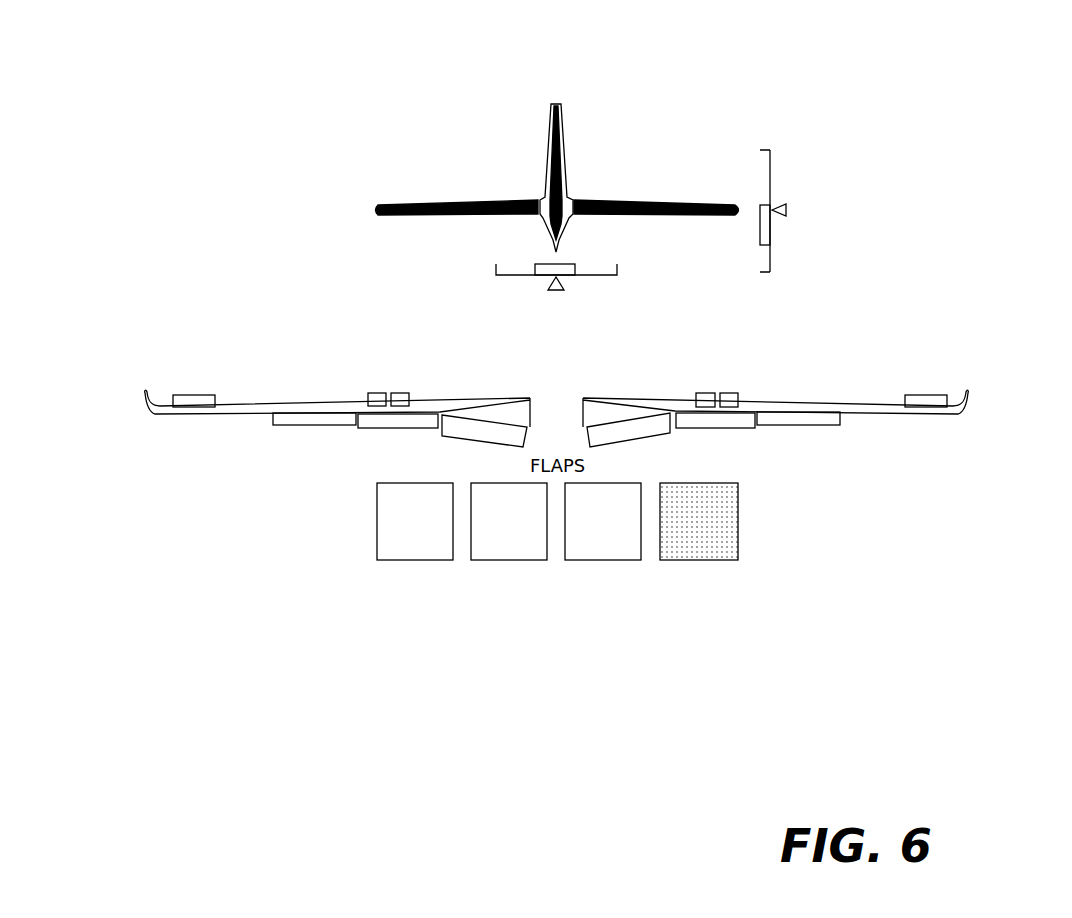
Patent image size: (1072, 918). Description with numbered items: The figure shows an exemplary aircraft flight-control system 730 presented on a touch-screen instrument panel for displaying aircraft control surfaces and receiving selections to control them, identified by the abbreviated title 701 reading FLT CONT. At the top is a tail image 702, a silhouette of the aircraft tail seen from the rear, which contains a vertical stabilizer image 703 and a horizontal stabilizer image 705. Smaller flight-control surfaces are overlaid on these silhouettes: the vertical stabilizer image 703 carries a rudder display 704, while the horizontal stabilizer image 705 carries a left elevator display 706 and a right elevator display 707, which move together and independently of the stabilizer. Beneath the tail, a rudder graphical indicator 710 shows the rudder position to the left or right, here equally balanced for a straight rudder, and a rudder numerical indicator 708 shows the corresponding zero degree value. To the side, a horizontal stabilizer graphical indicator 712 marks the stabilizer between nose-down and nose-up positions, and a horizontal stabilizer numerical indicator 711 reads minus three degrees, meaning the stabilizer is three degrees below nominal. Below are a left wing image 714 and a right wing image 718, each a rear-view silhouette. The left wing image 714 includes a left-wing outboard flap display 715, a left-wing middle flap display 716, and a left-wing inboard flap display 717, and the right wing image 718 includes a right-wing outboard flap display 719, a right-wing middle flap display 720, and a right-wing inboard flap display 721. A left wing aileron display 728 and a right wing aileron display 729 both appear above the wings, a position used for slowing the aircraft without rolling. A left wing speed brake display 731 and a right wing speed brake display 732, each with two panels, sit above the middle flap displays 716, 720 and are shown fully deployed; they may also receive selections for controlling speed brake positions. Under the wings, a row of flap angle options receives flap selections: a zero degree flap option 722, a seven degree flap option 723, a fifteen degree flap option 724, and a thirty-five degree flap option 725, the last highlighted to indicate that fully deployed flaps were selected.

The abbreviated title 701 is at (167, 628).
The tail image 702 is at (356, 151).
The vertical stabilizer image 703 is at (556, 102).
The rudder display 704 is at (550, 162).
The horizontal stabilizer image 705 is at (376, 210).
The left elevator display 706 is at (415, 200).
The right elevator display 707 is at (640, 200).
The rudder numerical indicator 708 is at (548, 313).
The rudder graphical indicator 710 is at (496, 274).
The horizontal stabilizer numerical indicator 711 is at (826, 203).
The horizontal stabilizer graphical indicator 712 is at (766, 150).
The left wing image 714 is at (152, 407).
The left-wing outboard flap display 715 is at (313, 427).
The left-wing middle flap display 716 is at (393, 429).
The left-wing inboard flap display 717 is at (470, 439).
The right wing image 718 is at (960, 406).
The right-wing outboard flap display 719 is at (812, 426).
The right-wing middle flap display 720 is at (724, 429).
The right-wing inboard flap display 721 is at (632, 441).
The zero degree flap option 722 is at (412, 562).
The seven degree flap option 723 is at (508, 562).
The fifteen degree flap option 724 is at (600, 562).
The thirty-five degree flap option 725 is at (700, 562).
The left wing aileron display 728 is at (186, 392).
The right wing aileron display 729 is at (920, 393).
The aircraft flight-control system 730 is at (128, 88).
The left wing speed brake display 731 is at (372, 392).
The right wing speed brake display 732 is at (702, 392).